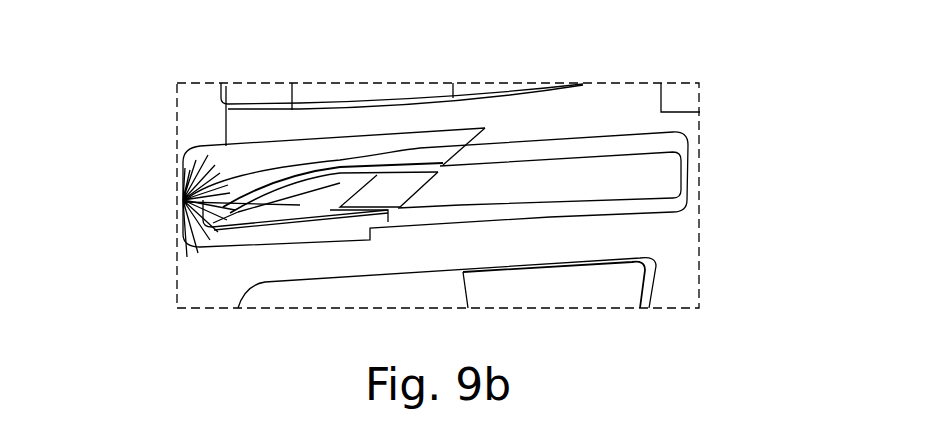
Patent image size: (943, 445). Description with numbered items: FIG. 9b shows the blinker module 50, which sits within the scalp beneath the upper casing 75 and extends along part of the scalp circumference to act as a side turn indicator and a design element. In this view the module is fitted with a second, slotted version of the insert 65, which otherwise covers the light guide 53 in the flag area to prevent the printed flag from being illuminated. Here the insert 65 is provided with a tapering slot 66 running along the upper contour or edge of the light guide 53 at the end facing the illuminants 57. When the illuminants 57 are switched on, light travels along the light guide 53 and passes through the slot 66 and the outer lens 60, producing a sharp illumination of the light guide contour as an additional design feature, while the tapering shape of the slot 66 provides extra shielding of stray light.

The blinker module 50 is at (716, 172).
The light guide 53 is at (653, 172).
The illuminants 57 is at (180, 216).
The outer lens 60 is at (630, 100).
The insert 65 is at (273, 153).
The slot 66 is at (375, 176).
The upper casing 75 is at (231, 113).